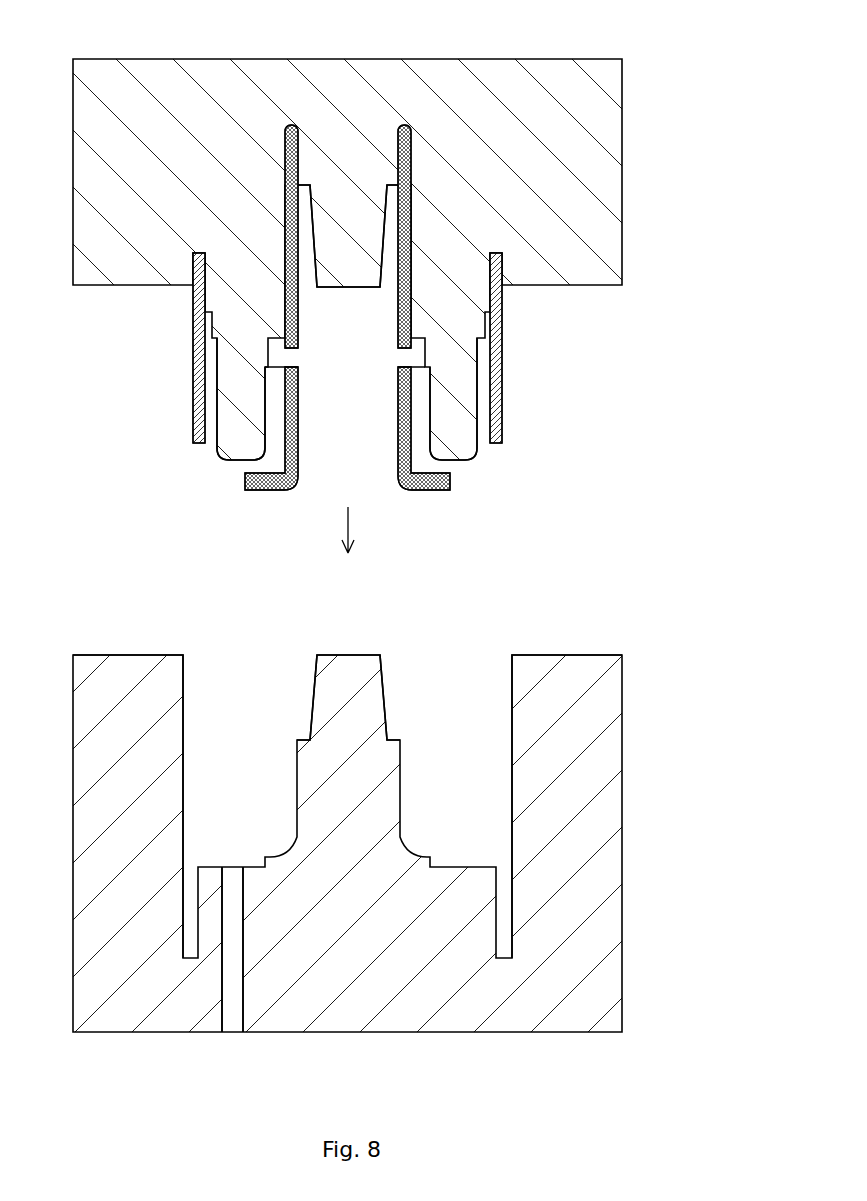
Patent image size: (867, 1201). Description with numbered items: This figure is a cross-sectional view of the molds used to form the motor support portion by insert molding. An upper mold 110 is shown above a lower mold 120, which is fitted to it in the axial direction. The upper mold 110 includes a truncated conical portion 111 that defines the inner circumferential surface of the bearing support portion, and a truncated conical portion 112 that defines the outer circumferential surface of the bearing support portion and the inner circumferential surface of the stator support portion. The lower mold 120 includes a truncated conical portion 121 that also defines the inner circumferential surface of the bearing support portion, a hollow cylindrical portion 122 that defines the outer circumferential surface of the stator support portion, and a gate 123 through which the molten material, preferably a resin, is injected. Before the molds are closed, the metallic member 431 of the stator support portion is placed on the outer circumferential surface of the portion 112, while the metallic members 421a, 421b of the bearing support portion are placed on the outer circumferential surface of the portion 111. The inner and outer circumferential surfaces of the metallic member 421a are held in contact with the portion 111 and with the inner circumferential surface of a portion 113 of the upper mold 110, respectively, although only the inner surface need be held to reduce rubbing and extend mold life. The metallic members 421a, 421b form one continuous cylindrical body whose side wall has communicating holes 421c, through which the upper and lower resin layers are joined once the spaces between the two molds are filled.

The upper mold 110 is at (658, 123).
The truncated conical portion 111 is at (350, 213).
The truncated conical portion 112 is at (453, 383).
The portion of the upper mold 113 is at (285, 158).
The lower mold 120 is at (658, 901).
The truncated conical portion 121 is at (345, 678).
The hollow cylindrical portion 122 is at (107, 863).
The gate 123 is at (237, 1010).
The metallic member 421a is at (412, 303).
The metallic member 421b is at (411, 417).
The communicating holes 421c is at (421, 359).
The metallic member 431 is at (193, 333).